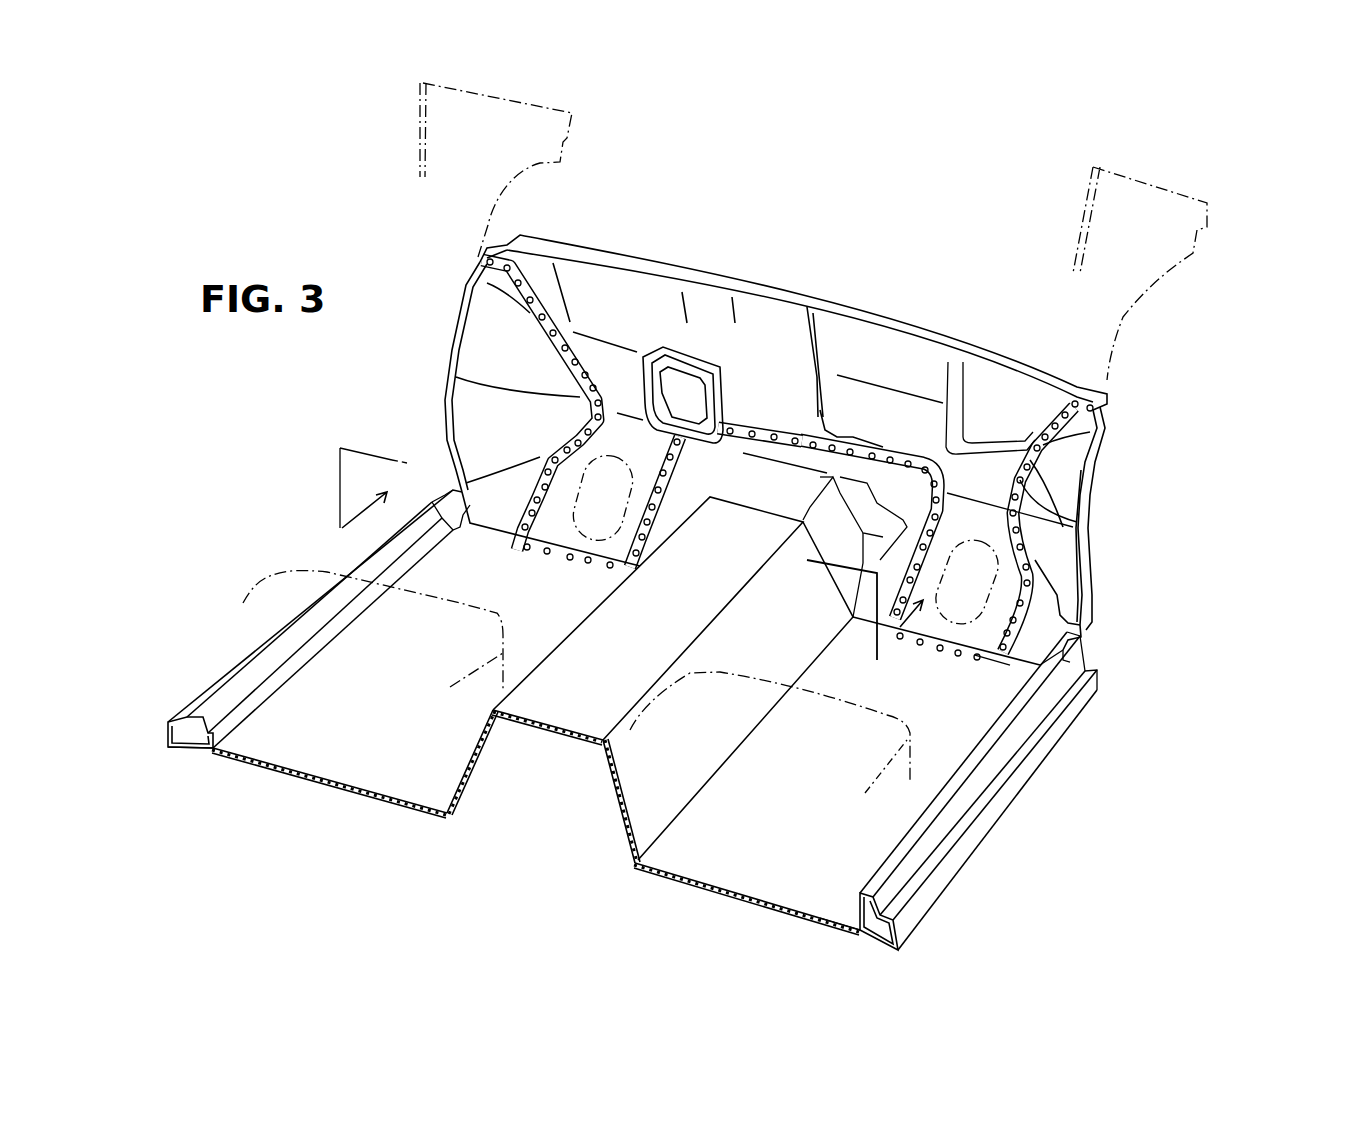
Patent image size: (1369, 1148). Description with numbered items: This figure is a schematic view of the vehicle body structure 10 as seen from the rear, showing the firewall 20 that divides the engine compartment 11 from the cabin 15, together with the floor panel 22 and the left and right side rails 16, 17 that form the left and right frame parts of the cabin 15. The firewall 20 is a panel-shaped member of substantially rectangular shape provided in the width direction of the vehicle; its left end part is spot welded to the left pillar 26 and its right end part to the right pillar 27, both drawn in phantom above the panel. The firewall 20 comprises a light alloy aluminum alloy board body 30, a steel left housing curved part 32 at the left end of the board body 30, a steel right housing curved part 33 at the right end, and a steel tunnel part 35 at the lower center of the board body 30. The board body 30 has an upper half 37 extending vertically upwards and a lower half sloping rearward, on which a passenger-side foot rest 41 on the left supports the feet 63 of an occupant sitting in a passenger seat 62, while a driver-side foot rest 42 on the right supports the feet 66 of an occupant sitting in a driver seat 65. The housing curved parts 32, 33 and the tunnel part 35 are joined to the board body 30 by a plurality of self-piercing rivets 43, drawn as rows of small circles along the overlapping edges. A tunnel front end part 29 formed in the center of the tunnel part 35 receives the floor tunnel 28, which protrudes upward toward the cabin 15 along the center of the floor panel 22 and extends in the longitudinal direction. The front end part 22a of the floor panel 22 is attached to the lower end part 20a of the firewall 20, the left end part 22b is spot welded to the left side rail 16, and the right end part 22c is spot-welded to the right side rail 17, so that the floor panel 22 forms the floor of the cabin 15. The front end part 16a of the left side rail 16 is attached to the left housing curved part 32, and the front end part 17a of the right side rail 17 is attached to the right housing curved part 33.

The vehicle body structure 10 is at (356, 147).
The engine compartment 11 is at (980, 194).
The cabin 15 is at (648, 647).
The left side rail 16 is at (275, 647).
The front end part of the left side rail 16a is at (470, 507).
The right side rail 17 is at (917, 860).
The front end part of the right side rail 17a is at (1068, 650).
The firewall 20 is at (745, 232).
The lower end part of the firewall 20a is at (1040, 655).
The floor panel 22 is at (975, 714).
The front end part of the floor panel 22a is at (997, 663).
The left end part of the floor panel 22b is at (247, 723).
The right end part of the floor panel 22c is at (843, 910).
The left pillar 26 is at (550, 140).
The right pillar 27 is at (1187, 235).
The floor tunnel 28 is at (543, 685).
The tunnel front end part 29 is at (790, 482).
The board body 30 is at (791, 272).
The left housing curved part 32 is at (480, 343).
The right housing curved part 33 is at (1070, 488).
The tunnel part 35 is at (897, 477).
The upper half 37 is at (860, 340).
The passenger-side foot rest 41 is at (555, 490).
The driver-side foot rest 42 is at (1007, 587).
The self-piercing rivets 43 is at (573, 330).
The passenger seat 62 is at (273, 573).
The feet of a vehicle occupant sitting in a passenger seat 63 is at (683, 530).
The driver seat 65 is at (863, 787).
The feet of a vehicle occupant sitting in a driver seat 66 is at (993, 553).